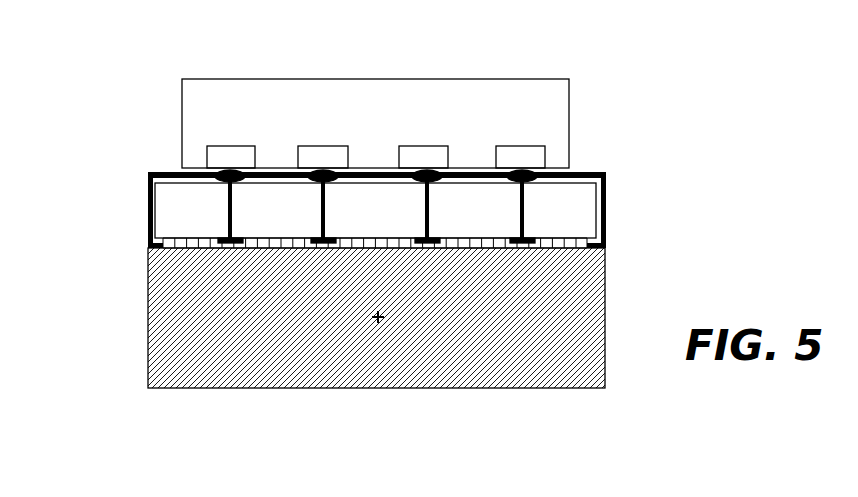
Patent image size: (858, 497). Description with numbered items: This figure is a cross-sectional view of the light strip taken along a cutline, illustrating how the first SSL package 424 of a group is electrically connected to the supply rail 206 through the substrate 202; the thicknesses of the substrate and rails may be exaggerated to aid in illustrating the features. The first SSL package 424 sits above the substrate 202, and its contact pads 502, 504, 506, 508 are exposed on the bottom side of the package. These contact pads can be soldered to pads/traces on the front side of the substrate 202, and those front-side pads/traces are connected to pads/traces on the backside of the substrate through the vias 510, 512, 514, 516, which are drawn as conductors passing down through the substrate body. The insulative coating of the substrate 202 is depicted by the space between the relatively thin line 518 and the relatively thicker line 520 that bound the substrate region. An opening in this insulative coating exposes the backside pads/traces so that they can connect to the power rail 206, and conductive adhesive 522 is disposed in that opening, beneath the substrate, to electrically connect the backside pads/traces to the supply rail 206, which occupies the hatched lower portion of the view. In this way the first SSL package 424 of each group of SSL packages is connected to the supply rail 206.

The first SSL package 424 is at (569, 146).
The contact pad 502 is at (232, 146).
The contact pad 504 is at (321, 146).
The contact pad 506 is at (426, 146).
The contact pad 508 is at (531, 146).
The via 510 is at (229, 197).
The via 512 is at (322, 197).
The via 514 is at (426, 197).
The via 516 is at (521, 197).
The relatively thin line 518 is at (149, 187).
The relatively thicker line 520 is at (149, 228).
The conductive adhesive 522 is at (185, 242).
The substrate 202 is at (578, 220).
The supply rail 206 is at (605, 265).